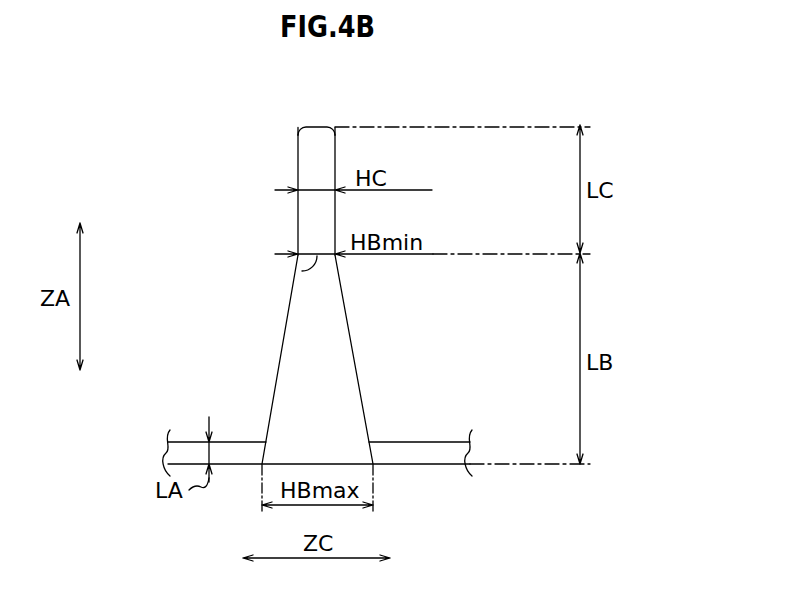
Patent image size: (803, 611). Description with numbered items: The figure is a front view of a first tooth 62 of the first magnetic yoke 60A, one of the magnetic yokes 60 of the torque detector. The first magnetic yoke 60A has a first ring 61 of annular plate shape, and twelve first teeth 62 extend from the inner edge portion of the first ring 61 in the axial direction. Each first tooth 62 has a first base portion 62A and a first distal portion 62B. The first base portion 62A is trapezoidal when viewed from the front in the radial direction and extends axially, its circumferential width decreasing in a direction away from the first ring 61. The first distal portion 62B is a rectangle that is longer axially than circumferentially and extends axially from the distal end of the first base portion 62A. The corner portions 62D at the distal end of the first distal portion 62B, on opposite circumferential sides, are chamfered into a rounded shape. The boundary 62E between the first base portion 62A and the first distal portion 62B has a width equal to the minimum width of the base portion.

The first magnetic yoke 60A is at (134, 130).
The magnetic yoke 60 is at (365, 293).
The first ring 61 is at (418, 455).
The first tooth 62 is at (298, 157).
The first base portion 62A is at (291, 343).
The first distal portion 62B is at (299, 220).
The corner portion 62D is at (302, 129).
The boundary 62E is at (302, 271).